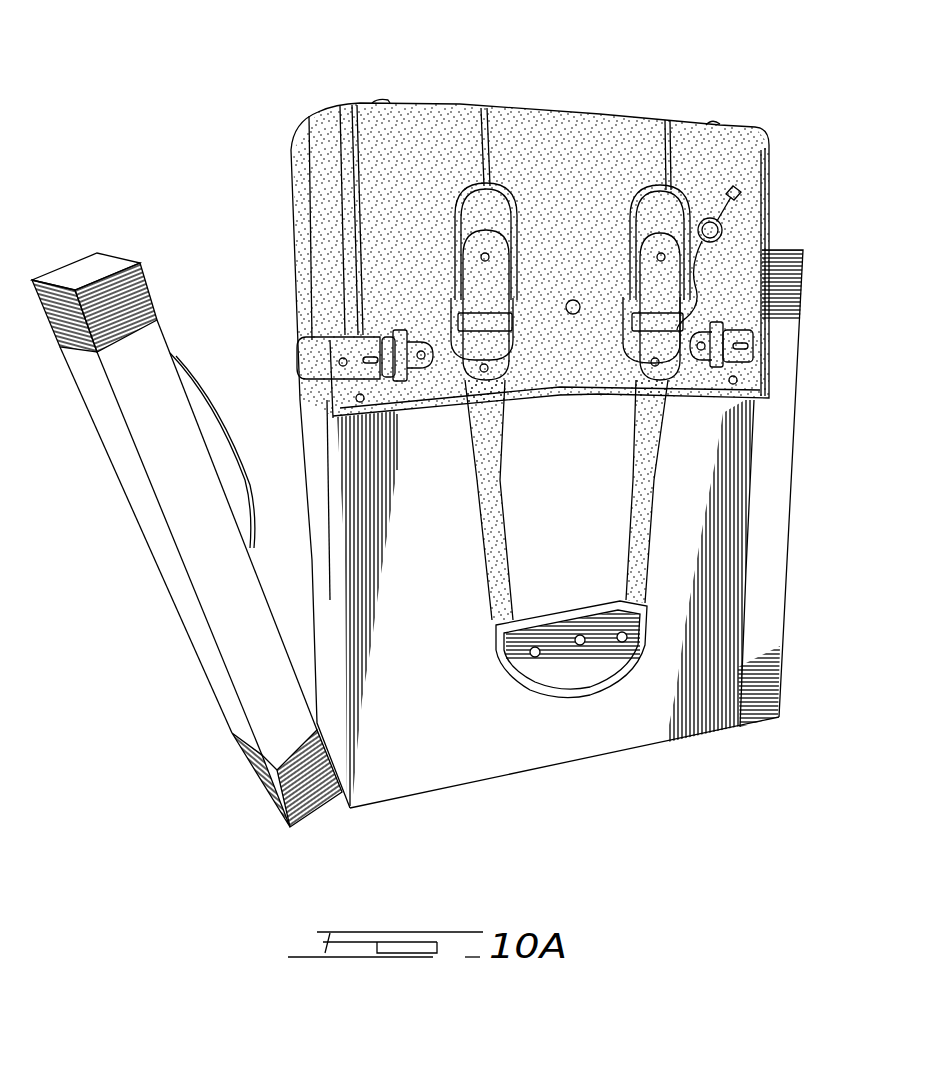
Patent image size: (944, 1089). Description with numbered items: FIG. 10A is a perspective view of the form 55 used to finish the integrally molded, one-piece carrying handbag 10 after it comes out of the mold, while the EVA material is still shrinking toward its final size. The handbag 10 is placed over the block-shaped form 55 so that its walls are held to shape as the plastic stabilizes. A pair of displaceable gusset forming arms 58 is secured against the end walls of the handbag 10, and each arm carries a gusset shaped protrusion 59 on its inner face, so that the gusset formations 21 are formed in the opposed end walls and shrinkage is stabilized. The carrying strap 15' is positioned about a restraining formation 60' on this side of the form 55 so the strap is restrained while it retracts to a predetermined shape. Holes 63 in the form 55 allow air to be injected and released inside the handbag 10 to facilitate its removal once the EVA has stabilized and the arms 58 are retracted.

The one-piece carrying handbag 10 is at (736, 143).
The holes 63 is at (586, 296).
The gusset formations 21 is at (317, 387).
The form 55 is at (367, 477).
The gusset forming arms 58 is at (248, 642).
The gusset shaped protrusion 59 is at (212, 426).
The carrying strap 15' is at (555, 524).
The restraining formation 60' is at (613, 698).